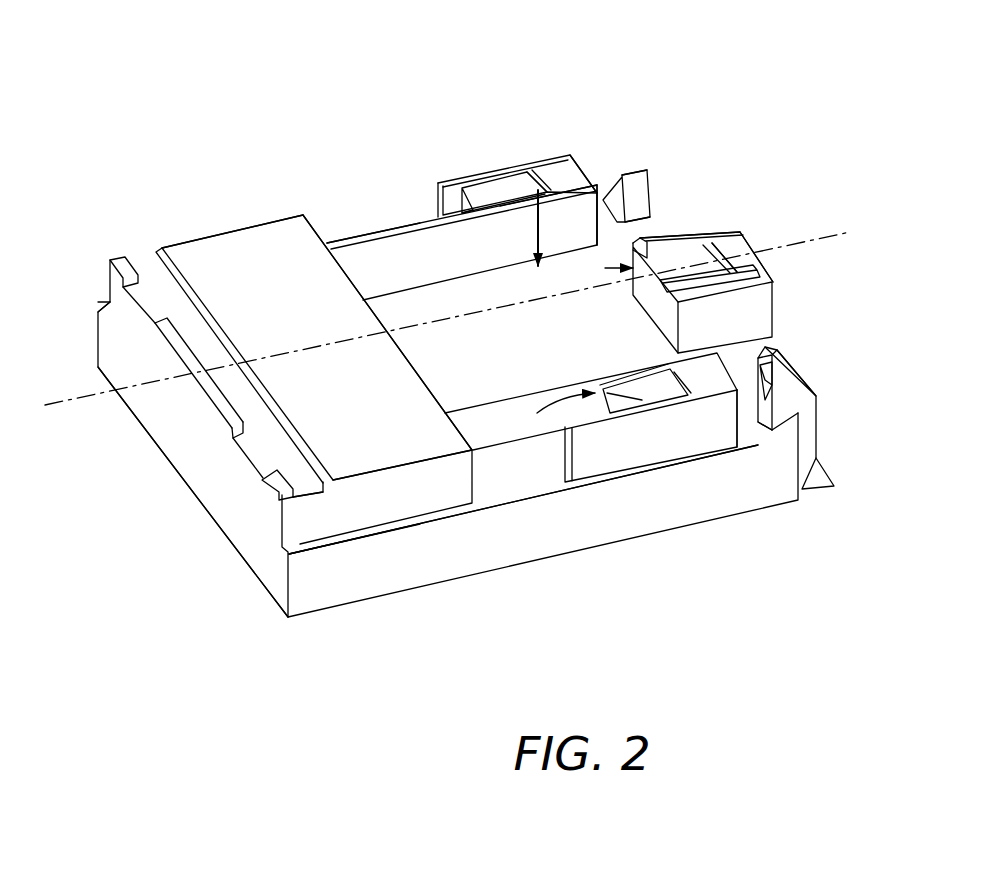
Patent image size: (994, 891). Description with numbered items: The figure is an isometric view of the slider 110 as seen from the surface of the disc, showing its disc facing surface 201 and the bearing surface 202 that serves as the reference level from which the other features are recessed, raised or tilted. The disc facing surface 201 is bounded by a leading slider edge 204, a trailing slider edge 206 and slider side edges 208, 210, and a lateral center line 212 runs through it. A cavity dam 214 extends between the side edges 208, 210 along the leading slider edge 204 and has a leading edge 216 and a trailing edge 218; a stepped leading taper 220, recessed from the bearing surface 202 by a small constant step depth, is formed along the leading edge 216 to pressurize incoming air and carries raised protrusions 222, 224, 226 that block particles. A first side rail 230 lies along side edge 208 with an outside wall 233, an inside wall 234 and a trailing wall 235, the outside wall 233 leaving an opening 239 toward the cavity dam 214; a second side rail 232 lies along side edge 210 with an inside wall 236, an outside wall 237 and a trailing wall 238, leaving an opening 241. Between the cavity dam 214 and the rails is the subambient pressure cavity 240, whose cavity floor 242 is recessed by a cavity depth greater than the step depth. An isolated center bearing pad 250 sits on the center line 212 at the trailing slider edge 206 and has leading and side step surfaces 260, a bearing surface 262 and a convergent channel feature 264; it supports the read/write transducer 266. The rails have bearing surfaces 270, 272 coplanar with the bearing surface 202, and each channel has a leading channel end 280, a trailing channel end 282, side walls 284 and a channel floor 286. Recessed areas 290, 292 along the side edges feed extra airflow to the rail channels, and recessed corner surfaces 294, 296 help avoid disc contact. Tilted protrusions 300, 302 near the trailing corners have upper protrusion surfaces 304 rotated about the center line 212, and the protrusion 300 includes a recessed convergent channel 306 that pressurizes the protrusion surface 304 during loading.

The slider 110 is at (218, 103).
The disc facing surface 201 is at (670, 210).
The bearing surface 202 is at (262, 246).
The leading slider edge 204 is at (148, 435).
The trailing slider edge 206 is at (805, 387).
The slider side edge 208 is at (568, 553).
The slider side edge 210 is at (603, 183).
The lateral center line 212 is at (84, 397).
The cavity dam 214 is at (200, 245).
The leading edge 216 is at (322, 486).
The trailing edge 218 is at (430, 383).
The stepped leading taper 220 is at (240, 432).
The raised protrusion 222 is at (267, 490).
The raised protrusion 224 is at (215, 410).
The raised protrusion 226 is at (112, 259).
The first side rail 230 is at (493, 402).
The second side rail 232 is at (387, 230).
The outside wall 233 is at (580, 433).
The inside wall 234 is at (568, 390).
The trailing wall 235 is at (773, 330).
The inside wall 236 is at (437, 183).
The outside wall 237 is at (460, 198).
The trailing wall 238 is at (570, 172).
The opening 239 is at (500, 500).
The subambient pressure cavity 240 is at (540, 190).
The opening 241 is at (353, 223).
The cavity floor 242 is at (457, 339).
The isolated center bearing pad 250 is at (740, 233).
The leading and side step surfaces 260 is at (702, 252).
The bearing surface 262 is at (748, 262).
The convergent channel feature 264 is at (729, 245).
The read/write transducer 266 is at (763, 255).
The bearing surface 270 is at (735, 448).
The bearing surface 272 is at (557, 188).
The leading channel end 280 is at (566, 351).
The trailing channel end 282 is at (595, 192).
The side walls 284 is at (523, 186).
The channel floor 286 is at (542, 187).
The recessed area 290 is at (413, 524).
The recessed area 292 is at (104, 303).
The recessed corner surface 294 is at (836, 487).
The recessed corner surface 296 is at (667, 190).
The tilted protrusion 300 is at (783, 408).
The tilted protrusion 302 is at (640, 167).
The upper protrusion surface 304 is at (790, 351).
The recessed convergent channel 306 is at (755, 440).